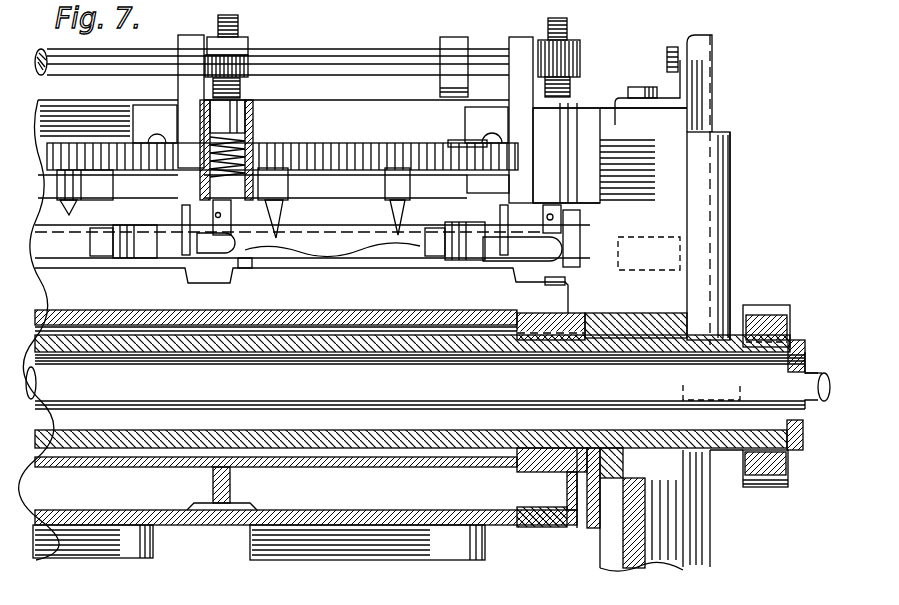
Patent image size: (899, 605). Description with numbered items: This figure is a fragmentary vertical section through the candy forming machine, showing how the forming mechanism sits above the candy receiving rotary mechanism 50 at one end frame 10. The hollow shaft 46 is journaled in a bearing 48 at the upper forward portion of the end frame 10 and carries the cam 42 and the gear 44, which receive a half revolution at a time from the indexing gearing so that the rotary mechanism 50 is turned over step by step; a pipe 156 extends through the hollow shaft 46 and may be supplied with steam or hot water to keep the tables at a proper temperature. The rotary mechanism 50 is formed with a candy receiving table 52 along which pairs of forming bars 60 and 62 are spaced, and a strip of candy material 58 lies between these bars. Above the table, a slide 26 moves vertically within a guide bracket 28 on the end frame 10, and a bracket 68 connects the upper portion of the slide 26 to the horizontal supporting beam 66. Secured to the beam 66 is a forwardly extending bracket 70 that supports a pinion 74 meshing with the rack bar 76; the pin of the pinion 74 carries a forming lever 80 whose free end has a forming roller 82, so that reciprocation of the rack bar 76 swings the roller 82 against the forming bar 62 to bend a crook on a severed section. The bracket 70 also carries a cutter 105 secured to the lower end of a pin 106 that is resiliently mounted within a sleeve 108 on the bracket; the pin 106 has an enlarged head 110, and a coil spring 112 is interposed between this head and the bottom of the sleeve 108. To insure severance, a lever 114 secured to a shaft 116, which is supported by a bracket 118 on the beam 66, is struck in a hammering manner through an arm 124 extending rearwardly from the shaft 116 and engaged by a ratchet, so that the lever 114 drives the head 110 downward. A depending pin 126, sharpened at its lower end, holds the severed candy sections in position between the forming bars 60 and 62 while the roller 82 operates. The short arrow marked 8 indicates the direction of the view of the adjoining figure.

The section line arrow 8 is at (648, 287).
The end frame 10 is at (667, 565).
The slide 26 is at (742, 118).
The guide bracket 28 is at (725, 180).
The cam 42 is at (798, 345).
The gear 44 is at (776, 312).
The hollow shaft 46 is at (728, 445).
The bearing 48 is at (598, 528).
The candy receiving rotary mechanism 50 is at (372, 326).
The candy receiving table 52 is at (72, 263).
The strip of candy material 58 is at (163, 251).
The forming bar 60 is at (117, 547).
The forming bar 62 is at (102, 244).
The horizontal supporting beam 66 is at (620, 113).
The bracket 68 is at (683, 80).
The bracket 70 is at (284, 215).
The pinion 74 is at (118, 152).
The rack bar 76 is at (50, 146).
The forming lever 80 is at (122, 220).
The forming roller 82 is at (185, 233).
The cutter 105 is at (244, 263).
The pin 106 is at (230, 188).
The sleeve 108 is at (254, 125).
The enlarged head 110 is at (232, 108).
The coil spring 112 is at (282, 140).
The lever 114 is at (243, 52).
The shaft 116 is at (413, 63).
The bracket 118 is at (178, 42).
The arm 124 is at (453, 48).
The depending pin 126 is at (355, 256).
The pipe 156 is at (827, 405).